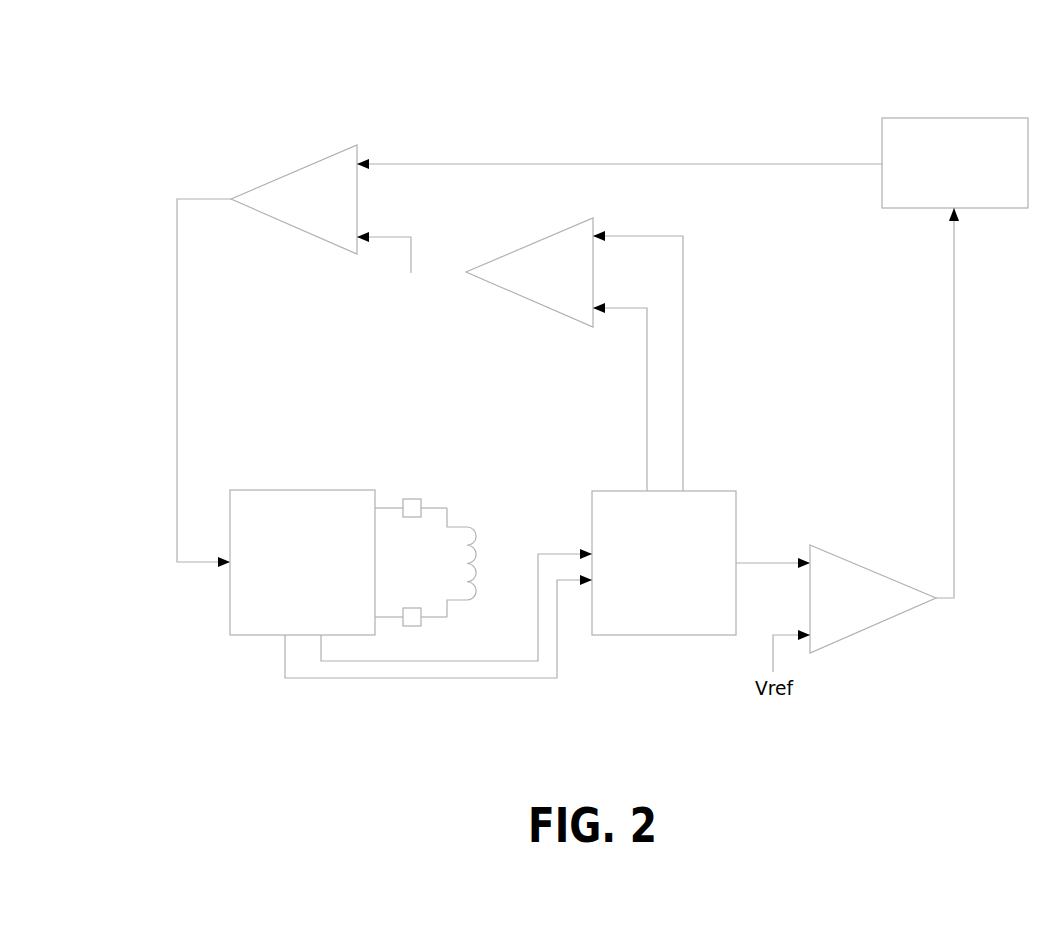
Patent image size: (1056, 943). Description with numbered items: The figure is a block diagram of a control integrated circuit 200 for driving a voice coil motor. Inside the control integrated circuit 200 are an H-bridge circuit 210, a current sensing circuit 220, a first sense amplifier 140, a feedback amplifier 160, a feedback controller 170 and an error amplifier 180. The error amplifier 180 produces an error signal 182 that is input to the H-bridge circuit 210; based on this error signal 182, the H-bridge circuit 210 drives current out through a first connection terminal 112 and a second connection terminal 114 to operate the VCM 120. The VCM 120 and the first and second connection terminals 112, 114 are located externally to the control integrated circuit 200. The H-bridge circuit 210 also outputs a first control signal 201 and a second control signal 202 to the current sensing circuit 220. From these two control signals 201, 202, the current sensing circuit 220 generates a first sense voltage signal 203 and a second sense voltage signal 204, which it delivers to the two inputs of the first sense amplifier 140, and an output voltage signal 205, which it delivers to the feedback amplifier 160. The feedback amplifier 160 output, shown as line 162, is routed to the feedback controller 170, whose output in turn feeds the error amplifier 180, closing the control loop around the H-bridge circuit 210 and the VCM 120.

The control integrated circuit 200 is at (88, 52).
The error amplifier 180 is at (293, 172).
The first sense amplifier 140 is at (528, 243).
The feedback controller 170 is at (900, 208).
The error signal 182 is at (177, 455).
The H-bridge circuit 210 is at (320, 490).
The first connection terminal 112 is at (410, 518).
The second connection terminal 114 is at (410, 626).
The VCM 120 is at (492, 553).
The current sensing circuit 220 is at (620, 490).
The first control signal 201 is at (537, 652).
The second control signal 202 is at (557, 643).
The first sense voltage signal 203 is at (646, 418).
The second sense voltage signal 204 is at (683, 418).
The output voltage signal 205 is at (755, 562).
The feedback amplifier 160 is at (873, 570).
The feedback amplifier output line 162 is at (954, 417).